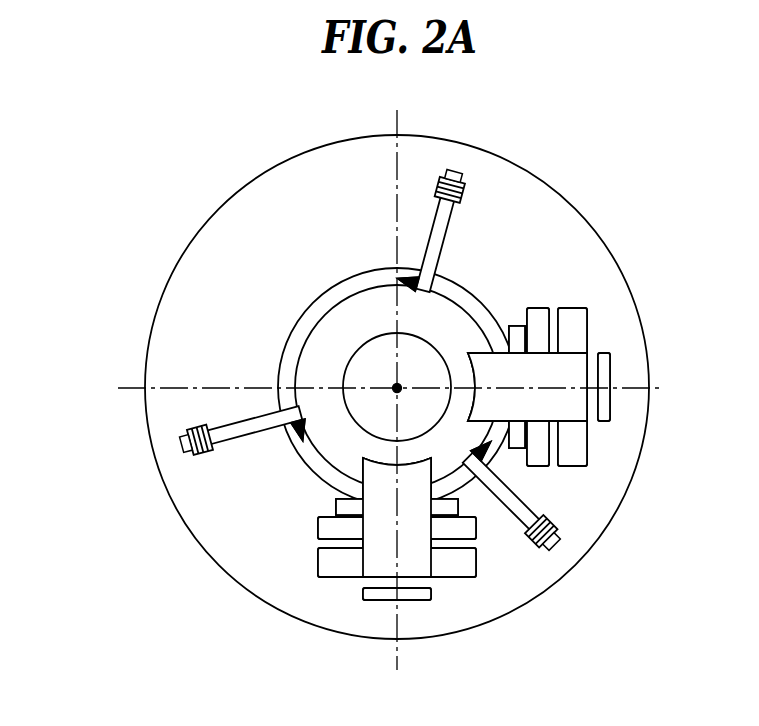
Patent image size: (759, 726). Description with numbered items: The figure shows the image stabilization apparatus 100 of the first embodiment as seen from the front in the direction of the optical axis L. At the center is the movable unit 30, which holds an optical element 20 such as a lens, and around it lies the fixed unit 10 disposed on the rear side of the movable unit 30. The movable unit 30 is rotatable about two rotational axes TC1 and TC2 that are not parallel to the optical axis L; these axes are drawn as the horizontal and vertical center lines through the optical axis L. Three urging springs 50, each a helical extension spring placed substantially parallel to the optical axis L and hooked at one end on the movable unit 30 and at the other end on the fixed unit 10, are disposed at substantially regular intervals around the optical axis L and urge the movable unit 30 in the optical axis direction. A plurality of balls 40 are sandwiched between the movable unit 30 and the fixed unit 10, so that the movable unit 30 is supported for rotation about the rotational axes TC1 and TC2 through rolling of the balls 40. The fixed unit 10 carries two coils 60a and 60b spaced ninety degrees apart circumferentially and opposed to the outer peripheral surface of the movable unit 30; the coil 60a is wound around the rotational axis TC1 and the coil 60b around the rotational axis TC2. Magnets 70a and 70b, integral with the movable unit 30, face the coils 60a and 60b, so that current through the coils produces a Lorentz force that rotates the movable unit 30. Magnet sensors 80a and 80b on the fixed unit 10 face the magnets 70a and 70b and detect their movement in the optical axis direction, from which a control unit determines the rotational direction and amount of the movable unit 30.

The image stabilization apparatus 100 is at (538, 152).
The fixed unit 10 is at (553, 227).
The optical element 20 is at (424, 353).
The movable unit 30 is at (340, 328).
The optical axis L is at (392, 386).
The balls 40 is at (395, 271).
The urging springs 50 is at (462, 178).
The coil 60a is at (547, 329).
The magnet 70a is at (587, 370).
The magnet sensor 80a is at (612, 405).
The rotational axis TC1 is at (662, 389).
The coil 60b is at (330, 530).
The magnet 70b is at (384, 582).
The magnet sensor 80b is at (413, 603).
The rotational axis TC2 is at (398, 672).